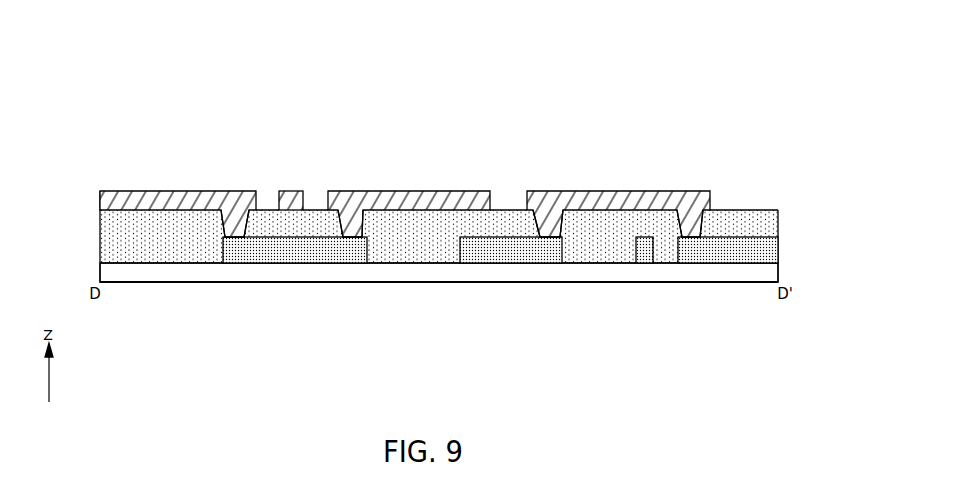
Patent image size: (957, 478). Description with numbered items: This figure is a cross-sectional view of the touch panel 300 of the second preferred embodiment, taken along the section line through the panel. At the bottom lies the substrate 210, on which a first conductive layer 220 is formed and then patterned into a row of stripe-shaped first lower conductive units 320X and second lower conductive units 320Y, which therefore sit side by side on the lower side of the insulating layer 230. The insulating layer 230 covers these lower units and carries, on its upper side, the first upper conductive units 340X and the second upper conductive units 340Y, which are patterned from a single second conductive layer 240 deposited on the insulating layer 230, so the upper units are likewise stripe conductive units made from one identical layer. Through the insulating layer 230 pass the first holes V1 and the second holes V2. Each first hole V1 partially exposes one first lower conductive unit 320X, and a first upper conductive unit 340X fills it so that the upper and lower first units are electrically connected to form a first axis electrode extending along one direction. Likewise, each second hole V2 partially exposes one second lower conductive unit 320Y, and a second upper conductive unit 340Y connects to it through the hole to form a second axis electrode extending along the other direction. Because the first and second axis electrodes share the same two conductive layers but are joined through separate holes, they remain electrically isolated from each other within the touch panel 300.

The touch panel 300 is at (680, 56).
The insulating layer 230 is at (100, 242).
The substrate 210 is at (110, 272).
The first conductive layer 220 is at (500, 279).
The first lower conductive unit 320X is at (297, 258).
The second lower conductive unit 320Y is at (513, 258).
The second conductive layer 240 is at (405, 196).
The first upper conductive unit 340X is at (163, 189).
The second upper conductive unit 340Y is at (292, 189).
The first hole V1 is at (236, 222).
The second hole V2 is at (553, 222).